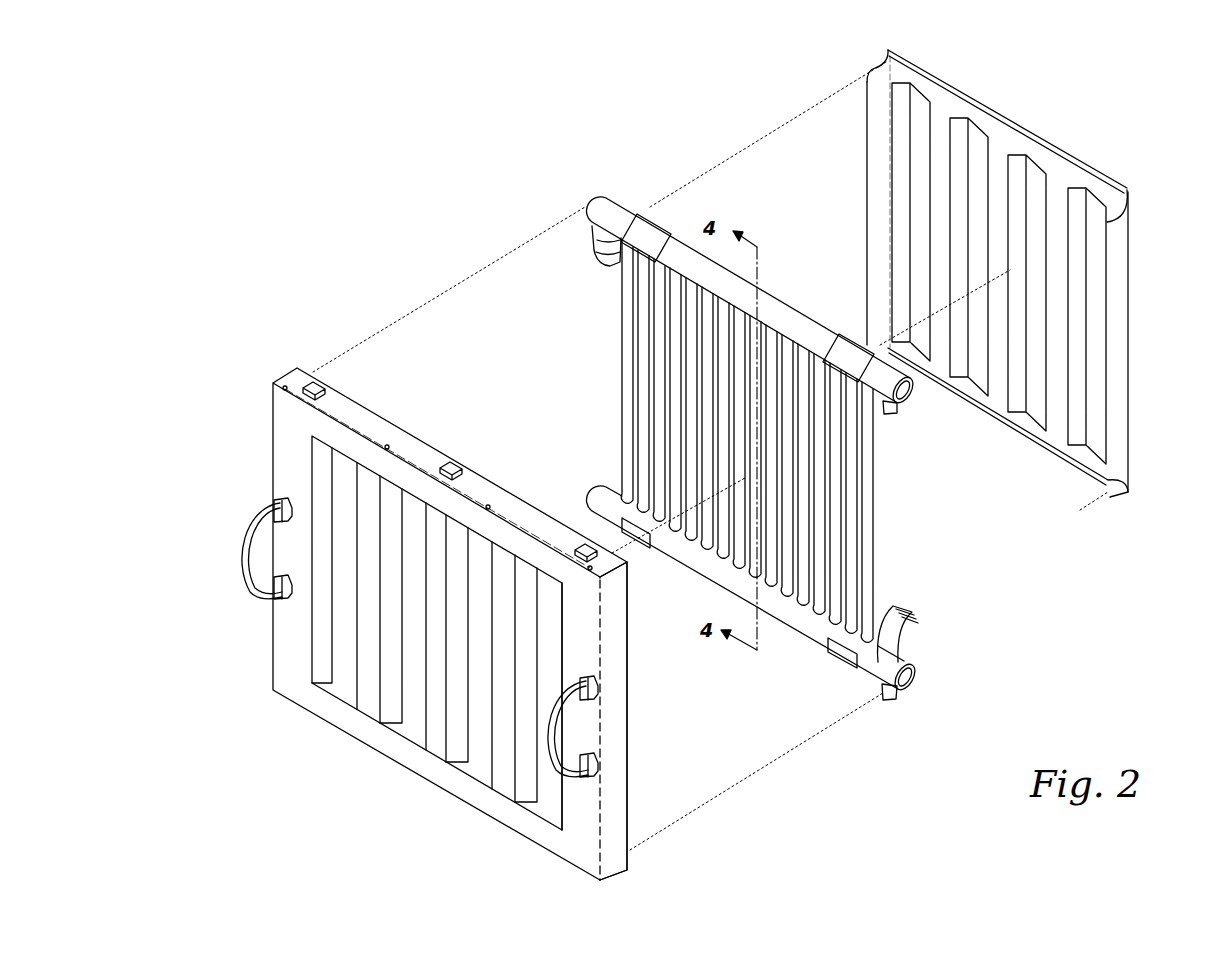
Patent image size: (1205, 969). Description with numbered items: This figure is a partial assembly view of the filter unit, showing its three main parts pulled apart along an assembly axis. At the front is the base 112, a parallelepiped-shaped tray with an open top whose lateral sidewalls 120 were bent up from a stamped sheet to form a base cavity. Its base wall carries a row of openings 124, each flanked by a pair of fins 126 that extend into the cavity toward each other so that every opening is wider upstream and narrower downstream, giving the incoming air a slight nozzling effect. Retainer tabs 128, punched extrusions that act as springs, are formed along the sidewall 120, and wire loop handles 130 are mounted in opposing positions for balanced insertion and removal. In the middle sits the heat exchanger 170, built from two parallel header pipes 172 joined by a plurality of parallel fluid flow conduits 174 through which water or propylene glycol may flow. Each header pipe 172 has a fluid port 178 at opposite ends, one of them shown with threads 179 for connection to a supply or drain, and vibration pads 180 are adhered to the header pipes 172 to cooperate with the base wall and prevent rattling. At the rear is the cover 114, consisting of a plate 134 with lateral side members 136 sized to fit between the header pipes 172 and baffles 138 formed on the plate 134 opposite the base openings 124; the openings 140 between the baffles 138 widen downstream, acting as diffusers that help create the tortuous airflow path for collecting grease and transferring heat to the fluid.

The base 112 is at (247, 434).
The cover 114 is at (1078, 100).
The lateral sidewall 120 is at (620, 718).
The opening 124 is at (343, 677).
The fin 126 is at (320, 668).
The retainer tab 128 is at (318, 383).
The handle 130 is at (238, 554).
The plate 134 is at (948, 100).
The lateral side member 136 is at (877, 152).
The baffle 138 is at (888, 107).
The opening 140 is at (1058, 405).
The heat exchanger 170 is at (572, 191).
The header pipe 172 is at (782, 318).
The fluid flow conduit 174 is at (655, 409).
The fluid port 178 is at (598, 262).
The threads 179 is at (912, 618).
The vibration pad 180 is at (648, 225).